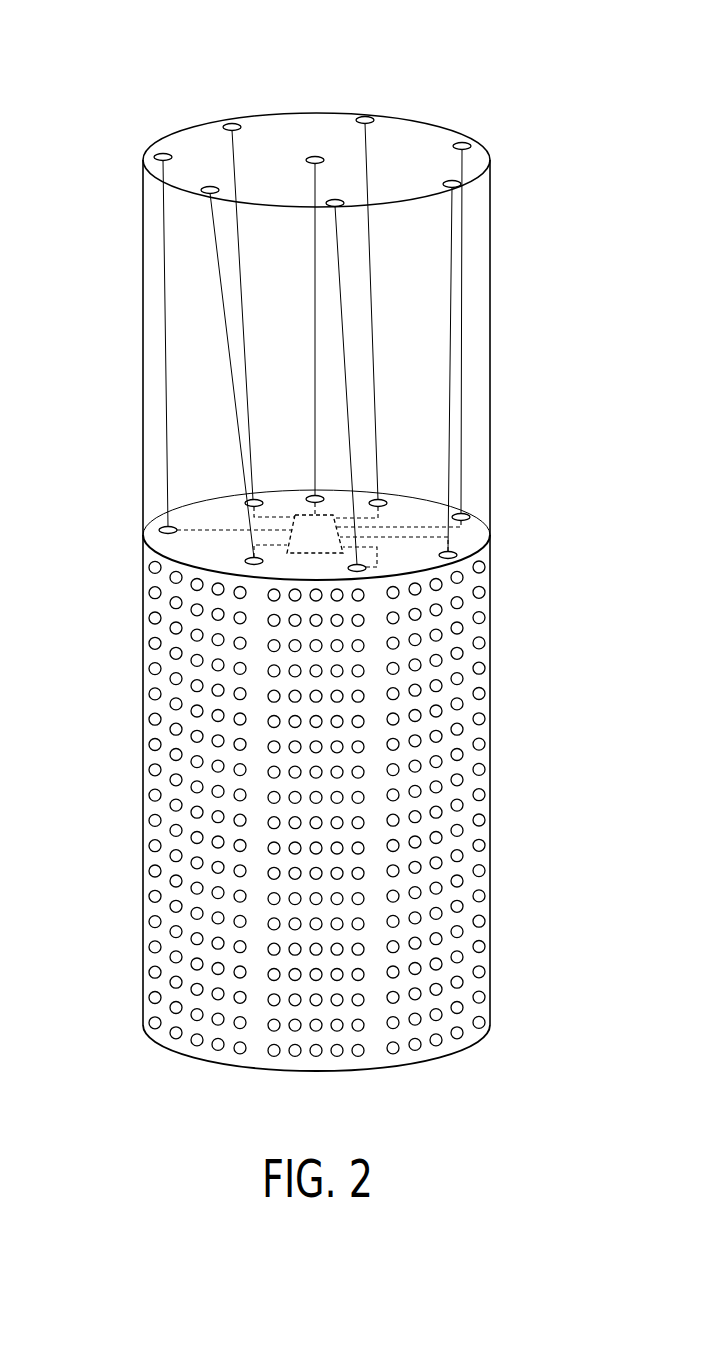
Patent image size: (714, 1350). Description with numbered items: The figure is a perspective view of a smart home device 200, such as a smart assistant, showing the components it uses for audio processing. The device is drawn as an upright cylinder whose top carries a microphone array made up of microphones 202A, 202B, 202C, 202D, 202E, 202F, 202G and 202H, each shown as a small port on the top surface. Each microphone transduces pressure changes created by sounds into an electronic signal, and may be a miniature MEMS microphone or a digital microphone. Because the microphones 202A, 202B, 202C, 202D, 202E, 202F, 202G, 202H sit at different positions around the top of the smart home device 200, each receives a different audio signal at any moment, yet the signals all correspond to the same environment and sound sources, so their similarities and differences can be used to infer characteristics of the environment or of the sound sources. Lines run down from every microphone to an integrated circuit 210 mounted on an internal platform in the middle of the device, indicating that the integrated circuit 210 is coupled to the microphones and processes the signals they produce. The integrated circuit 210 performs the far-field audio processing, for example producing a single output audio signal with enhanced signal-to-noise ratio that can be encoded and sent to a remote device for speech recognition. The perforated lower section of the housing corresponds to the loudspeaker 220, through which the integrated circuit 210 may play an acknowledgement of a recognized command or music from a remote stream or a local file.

The smart home device 200 is at (92, 76).
The microphone 202A is at (375, 120).
The microphone 202B is at (472, 147).
The microphone 202C is at (463, 184).
The microphone 202D is at (326, 205).
The microphone 202E is at (200, 192).
The microphone 202F is at (152, 156).
The microphone 202G is at (222, 126).
The microphone 202H is at (315, 156).
The integrated circuit 210 is at (304, 514).
The loudspeaker 220 is at (491, 452).